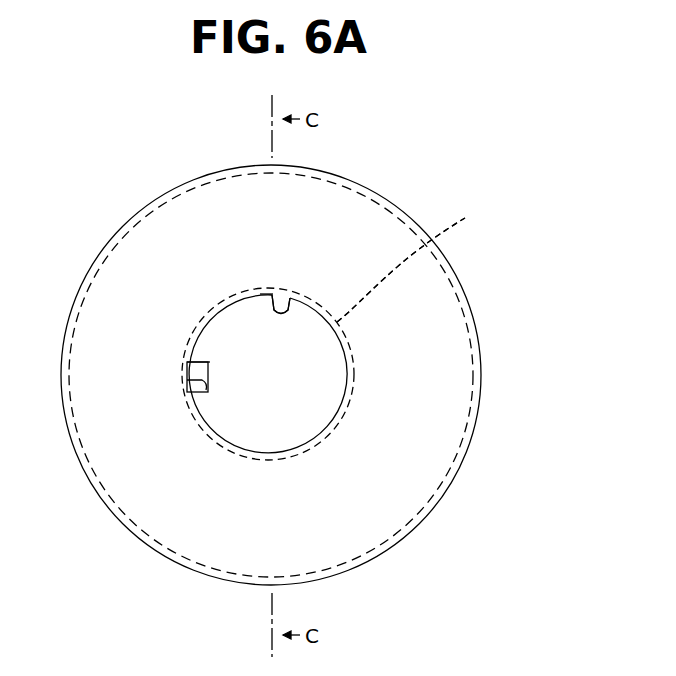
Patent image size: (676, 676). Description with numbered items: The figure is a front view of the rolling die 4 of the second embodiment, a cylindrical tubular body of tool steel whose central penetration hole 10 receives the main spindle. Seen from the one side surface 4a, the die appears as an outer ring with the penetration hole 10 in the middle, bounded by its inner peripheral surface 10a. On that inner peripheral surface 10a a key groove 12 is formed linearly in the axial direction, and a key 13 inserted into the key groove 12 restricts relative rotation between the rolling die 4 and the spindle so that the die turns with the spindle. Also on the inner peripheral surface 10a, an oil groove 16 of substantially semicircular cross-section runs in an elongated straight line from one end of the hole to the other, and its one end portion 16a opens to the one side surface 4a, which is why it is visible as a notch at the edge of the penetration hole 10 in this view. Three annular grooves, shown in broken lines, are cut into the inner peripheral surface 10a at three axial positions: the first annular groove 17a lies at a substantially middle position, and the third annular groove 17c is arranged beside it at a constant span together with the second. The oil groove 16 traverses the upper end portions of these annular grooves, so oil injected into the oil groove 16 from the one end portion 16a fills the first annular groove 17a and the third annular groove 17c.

The rolling die 4 is at (394, 198).
The one side surface 4a is at (440, 361).
The penetration hole 10 is at (289, 429).
The inner peripheral surface 10a is at (335, 401).
The key groove 12 is at (203, 397).
The key 13 is at (209, 368).
The oil groove 16 is at (298, 303).
The one end portion 16a is at (266, 298).
The first annular groove 17a is at (418, 258).
The third annular groove 17c is at (442, 258).